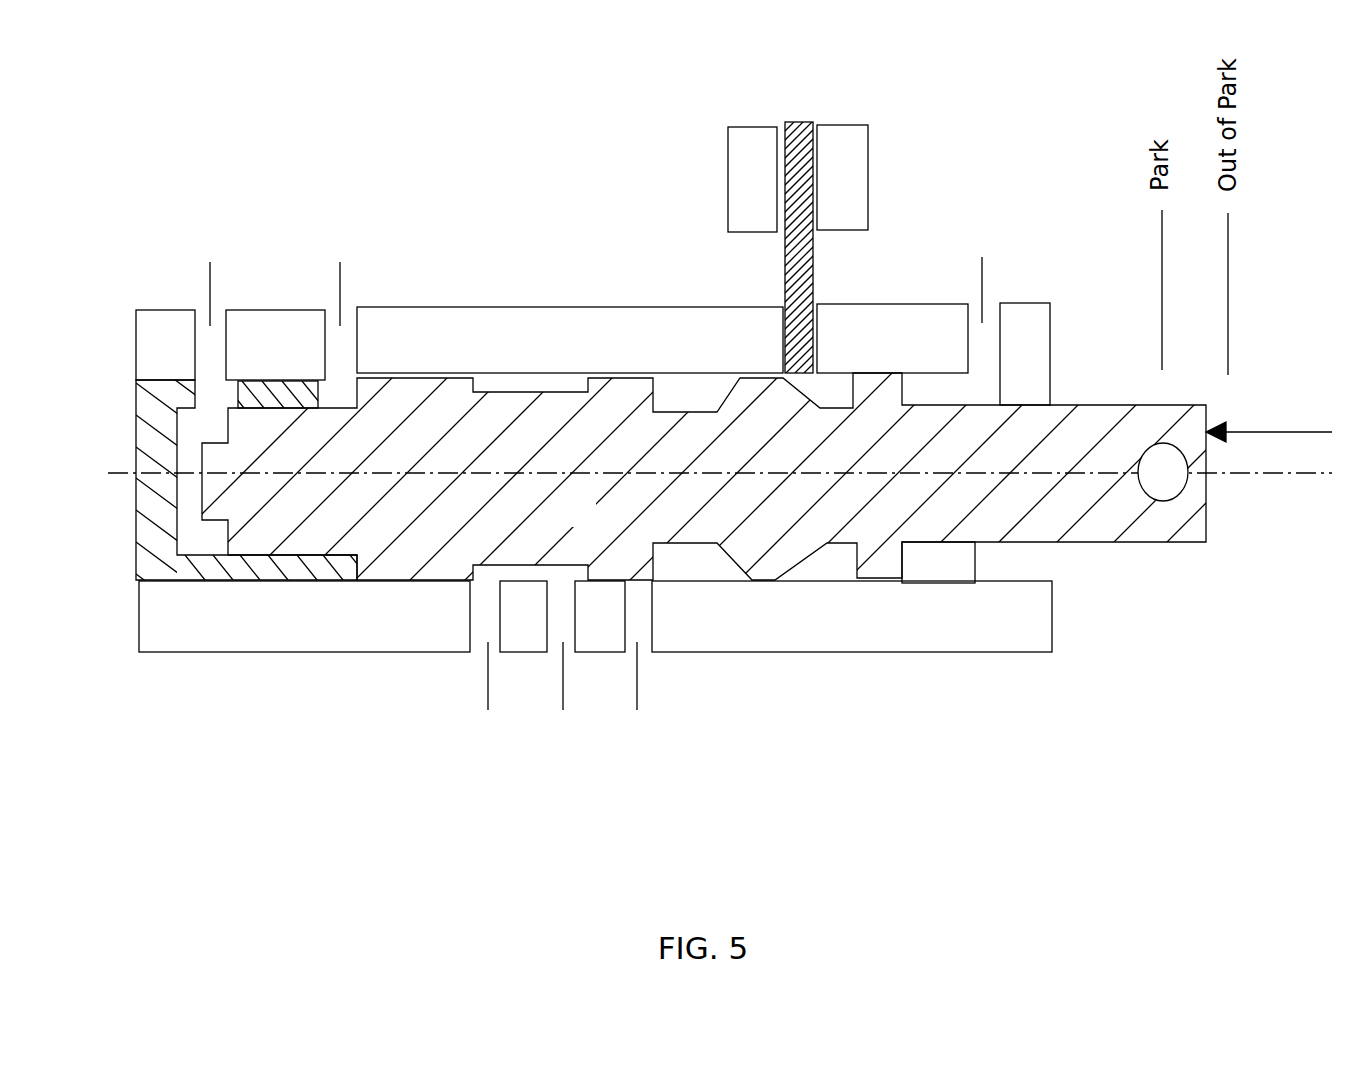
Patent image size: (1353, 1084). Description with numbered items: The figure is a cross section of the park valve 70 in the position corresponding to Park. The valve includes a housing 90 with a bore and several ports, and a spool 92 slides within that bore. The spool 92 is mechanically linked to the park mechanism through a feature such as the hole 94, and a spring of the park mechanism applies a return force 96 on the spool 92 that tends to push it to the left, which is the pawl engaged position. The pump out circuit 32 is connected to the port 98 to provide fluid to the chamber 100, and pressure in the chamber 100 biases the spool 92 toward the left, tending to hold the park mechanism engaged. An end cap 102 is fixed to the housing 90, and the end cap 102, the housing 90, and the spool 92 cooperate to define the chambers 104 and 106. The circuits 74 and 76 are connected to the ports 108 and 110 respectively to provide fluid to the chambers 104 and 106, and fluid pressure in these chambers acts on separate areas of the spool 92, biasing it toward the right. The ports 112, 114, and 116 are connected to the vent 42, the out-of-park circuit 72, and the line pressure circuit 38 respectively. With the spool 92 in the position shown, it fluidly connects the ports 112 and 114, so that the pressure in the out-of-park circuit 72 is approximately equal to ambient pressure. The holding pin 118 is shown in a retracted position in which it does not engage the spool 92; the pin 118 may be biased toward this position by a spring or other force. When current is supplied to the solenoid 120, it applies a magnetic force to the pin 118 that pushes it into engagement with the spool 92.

The park valve 70 is at (547, 88).
The housing 90 is at (611, 307).
The spool 92 is at (589, 525).
The hole 94 is at (1165, 502).
The return force 96 is at (1298, 433).
The port 98 is at (980, 330).
The chamber 100 is at (932, 557).
The end cap 102 is at (162, 425).
The chamber 104 is at (188, 523).
The chamber 106 is at (335, 393).
The port 108 is at (212, 357).
The port 110 is at (345, 357).
The port 112 is at (482, 612).
The port 114 is at (558, 620).
The port 116 is at (637, 622).
The holding pin 118 is at (785, 268).
The solenoid 120 is at (727, 163).
The circuit 74 is at (210, 195).
The circuit 76 is at (340, 195).
The pump out circuit 32 is at (982, 195).
The vent 42 is at (492, 751).
The out-of-park circuit 72 is at (570, 748).
The line pressure circuit 38 is at (645, 741).